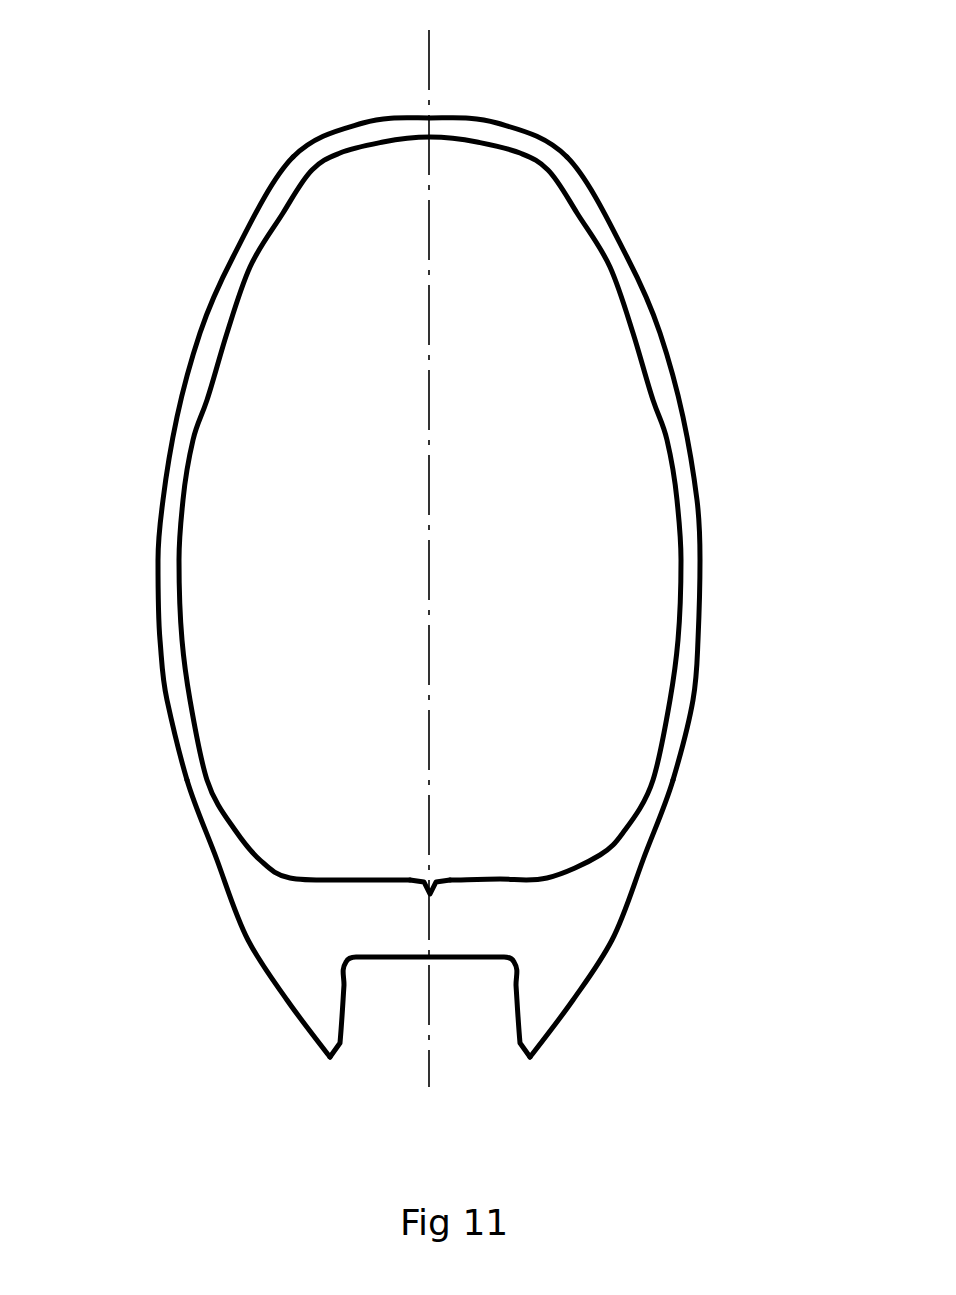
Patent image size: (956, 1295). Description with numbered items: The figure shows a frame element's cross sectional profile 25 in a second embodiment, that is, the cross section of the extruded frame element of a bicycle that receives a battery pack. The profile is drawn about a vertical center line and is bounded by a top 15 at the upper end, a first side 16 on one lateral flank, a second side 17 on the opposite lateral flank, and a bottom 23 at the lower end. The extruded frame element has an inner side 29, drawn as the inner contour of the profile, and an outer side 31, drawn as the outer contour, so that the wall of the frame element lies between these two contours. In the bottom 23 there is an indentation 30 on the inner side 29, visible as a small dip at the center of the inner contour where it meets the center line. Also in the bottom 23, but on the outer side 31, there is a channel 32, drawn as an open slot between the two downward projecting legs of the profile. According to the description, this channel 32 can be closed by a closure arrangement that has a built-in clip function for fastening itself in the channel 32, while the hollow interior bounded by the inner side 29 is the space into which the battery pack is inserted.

The top 15 is at (362, 120).
The first side 16 is at (697, 498).
The second side 17 is at (158, 520).
The bottom 23 is at (285, 932).
The frame element's cross sectional profile 25 is at (650, 72).
The inner side 29 is at (597, 258).
The indentation 30 is at (437, 890).
The outer side 31 is at (670, 368).
The channel 32 is at (498, 1066).